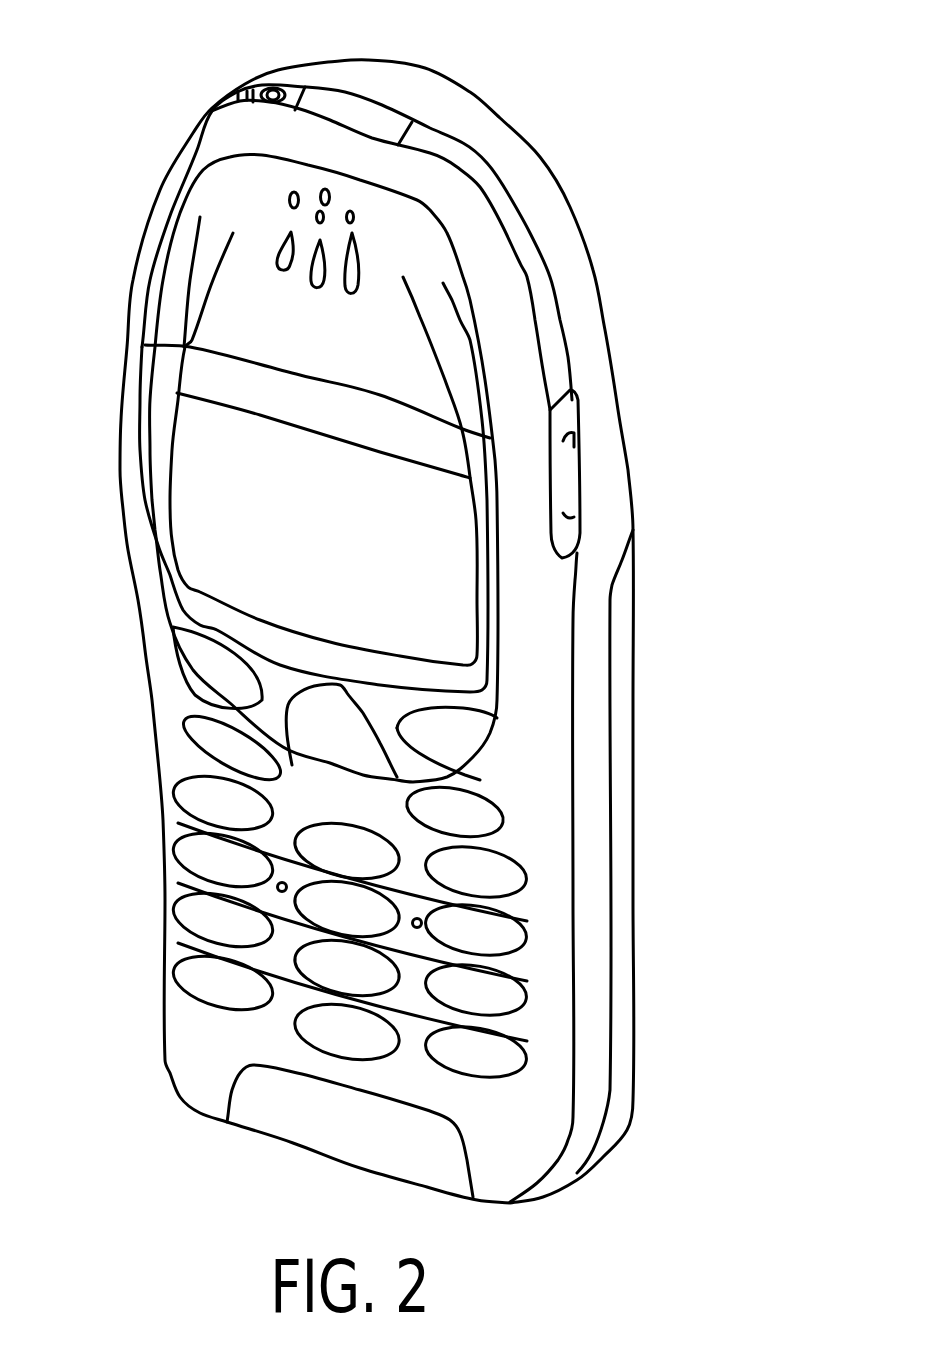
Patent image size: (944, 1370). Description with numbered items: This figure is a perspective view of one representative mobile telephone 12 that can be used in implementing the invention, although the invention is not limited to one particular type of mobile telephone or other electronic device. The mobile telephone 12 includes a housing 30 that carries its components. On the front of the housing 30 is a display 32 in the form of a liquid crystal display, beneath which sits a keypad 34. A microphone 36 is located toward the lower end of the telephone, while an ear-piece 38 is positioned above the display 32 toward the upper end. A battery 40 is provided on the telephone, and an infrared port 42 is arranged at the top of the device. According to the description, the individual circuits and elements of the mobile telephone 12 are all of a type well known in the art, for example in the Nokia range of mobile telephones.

The mobile telephone 12 is at (545, 70).
The housing 30 is at (583, 290).
The display 32 is at (440, 590).
The keypad 34 is at (473, 1060).
The microphone 36 is at (265, 1112).
The ear-piece 38 is at (307, 230).
The battery 40 is at (623, 1030).
The infrared port 42 is at (352, 112).